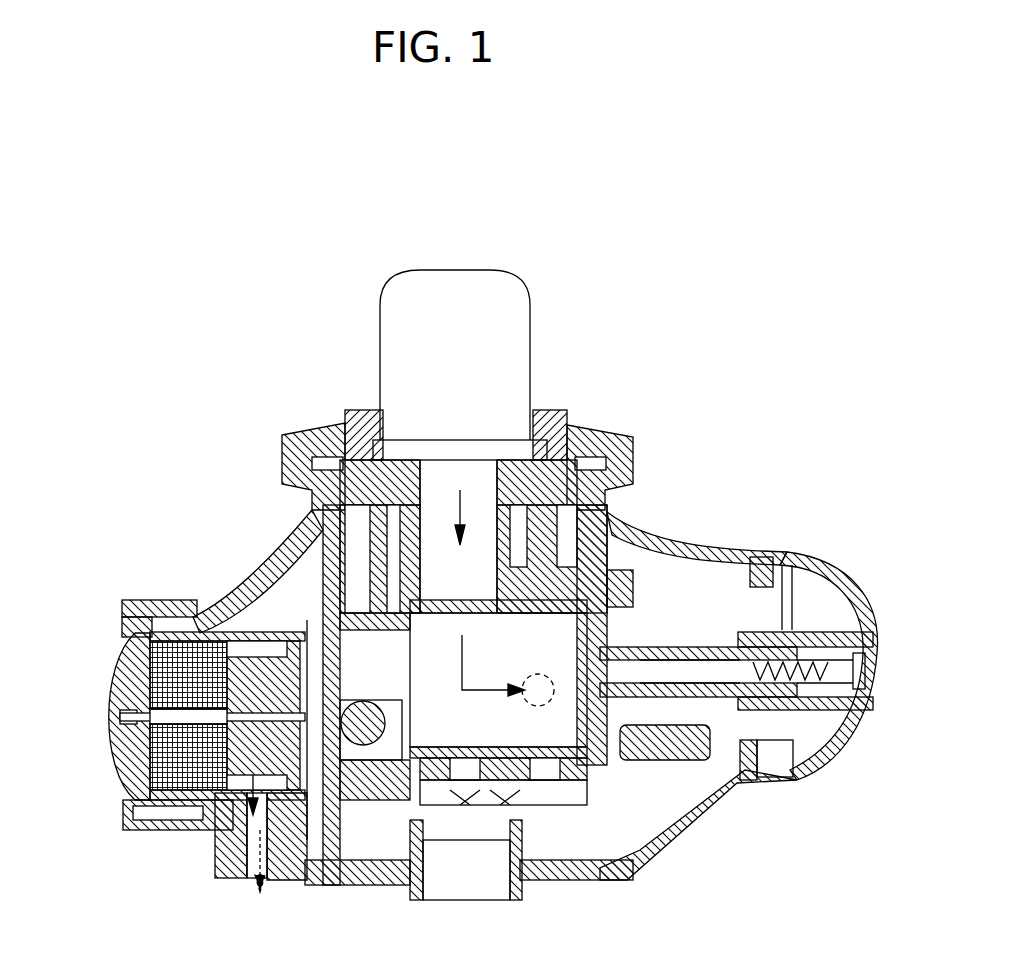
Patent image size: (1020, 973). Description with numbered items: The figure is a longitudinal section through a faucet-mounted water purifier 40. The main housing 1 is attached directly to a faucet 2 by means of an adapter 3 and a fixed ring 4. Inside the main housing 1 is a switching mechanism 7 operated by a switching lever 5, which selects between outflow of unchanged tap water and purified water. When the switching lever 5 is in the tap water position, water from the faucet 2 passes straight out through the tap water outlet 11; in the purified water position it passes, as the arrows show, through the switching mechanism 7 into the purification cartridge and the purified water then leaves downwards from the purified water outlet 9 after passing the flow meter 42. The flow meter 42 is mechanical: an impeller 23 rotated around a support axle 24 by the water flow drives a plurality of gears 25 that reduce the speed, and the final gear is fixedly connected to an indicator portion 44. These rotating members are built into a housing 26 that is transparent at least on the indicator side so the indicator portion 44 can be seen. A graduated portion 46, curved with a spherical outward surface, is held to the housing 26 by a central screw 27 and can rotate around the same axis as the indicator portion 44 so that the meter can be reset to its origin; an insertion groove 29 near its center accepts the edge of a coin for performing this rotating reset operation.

The main housing 1 is at (700, 546).
The faucet 2 is at (505, 284).
The adapter 3 is at (553, 418).
The fixed ring 4 is at (626, 452).
The switching lever 5 is at (848, 580).
The switching mechanism 7 is at (560, 732).
The purified water outlet 9 is at (300, 878).
The tap water outlet 11 is at (467, 897).
The impeller 23 is at (178, 815).
The support axle 24 is at (145, 752).
The gears 25 is at (175, 615).
The housing 26 is at (202, 822).
The screw 27 is at (110, 700).
The insertion groove 29 is at (118, 718).
The water purifier 40 is at (652, 288).
The flow meter 42 is at (297, 637).
The indicator portion 44 is at (142, 700).
The graduated portion 46 is at (112, 745).